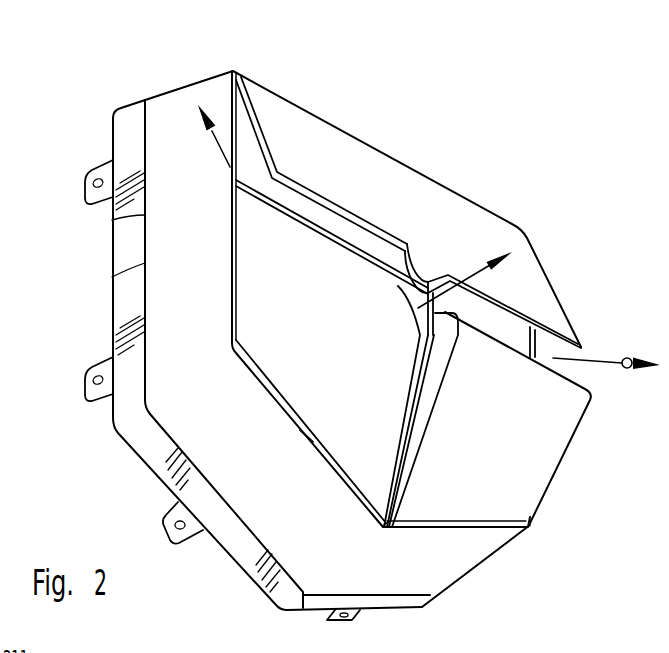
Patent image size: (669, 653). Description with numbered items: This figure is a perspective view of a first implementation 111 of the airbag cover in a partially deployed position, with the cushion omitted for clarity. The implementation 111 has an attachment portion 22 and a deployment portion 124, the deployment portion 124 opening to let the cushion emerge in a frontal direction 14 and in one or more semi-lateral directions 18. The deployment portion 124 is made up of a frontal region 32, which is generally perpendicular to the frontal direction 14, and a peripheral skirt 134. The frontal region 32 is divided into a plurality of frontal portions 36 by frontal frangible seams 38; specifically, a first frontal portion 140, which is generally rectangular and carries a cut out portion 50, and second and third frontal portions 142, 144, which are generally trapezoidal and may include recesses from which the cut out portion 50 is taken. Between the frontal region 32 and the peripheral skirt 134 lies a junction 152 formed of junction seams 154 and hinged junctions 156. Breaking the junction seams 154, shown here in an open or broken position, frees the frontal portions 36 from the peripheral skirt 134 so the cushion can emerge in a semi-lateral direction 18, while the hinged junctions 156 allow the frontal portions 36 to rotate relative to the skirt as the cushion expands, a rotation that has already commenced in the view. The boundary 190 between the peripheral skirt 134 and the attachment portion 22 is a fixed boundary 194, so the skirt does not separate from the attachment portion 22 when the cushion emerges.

The first implementation 111 is at (78, 96).
The attachment portion 22 is at (133, 107).
The deployment portion 124 is at (187, 92).
The frontal region 32 is at (385, 156).
The first frontal portion 140 is at (475, 210).
The junction seams 154 is at (271, 135).
The cut out portion 50 is at (421, 243).
The frontal frangible seams 38 is at (343, 247).
The frontal direction 14 is at (470, 273).
The semi-lateral direction 18 is at (232, 157).
The frontal portions 36 is at (543, 470).
The third frontal portion 144 is at (446, 512).
The second frontal portion 142 is at (275, 402).
The junction 152 is at (322, 460).
The hinged junctions 156 is at (334, 124).
The peripheral skirt 134 is at (140, 453).
The fixed boundary 194 is at (143, 216).
The boundary 190 is at (143, 264).